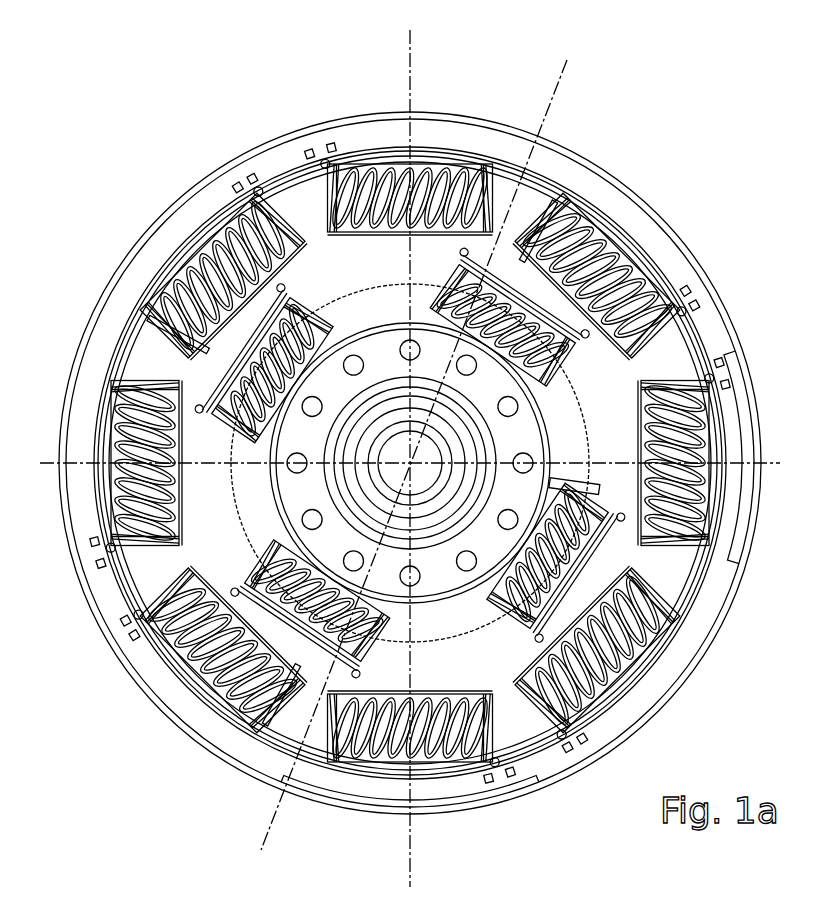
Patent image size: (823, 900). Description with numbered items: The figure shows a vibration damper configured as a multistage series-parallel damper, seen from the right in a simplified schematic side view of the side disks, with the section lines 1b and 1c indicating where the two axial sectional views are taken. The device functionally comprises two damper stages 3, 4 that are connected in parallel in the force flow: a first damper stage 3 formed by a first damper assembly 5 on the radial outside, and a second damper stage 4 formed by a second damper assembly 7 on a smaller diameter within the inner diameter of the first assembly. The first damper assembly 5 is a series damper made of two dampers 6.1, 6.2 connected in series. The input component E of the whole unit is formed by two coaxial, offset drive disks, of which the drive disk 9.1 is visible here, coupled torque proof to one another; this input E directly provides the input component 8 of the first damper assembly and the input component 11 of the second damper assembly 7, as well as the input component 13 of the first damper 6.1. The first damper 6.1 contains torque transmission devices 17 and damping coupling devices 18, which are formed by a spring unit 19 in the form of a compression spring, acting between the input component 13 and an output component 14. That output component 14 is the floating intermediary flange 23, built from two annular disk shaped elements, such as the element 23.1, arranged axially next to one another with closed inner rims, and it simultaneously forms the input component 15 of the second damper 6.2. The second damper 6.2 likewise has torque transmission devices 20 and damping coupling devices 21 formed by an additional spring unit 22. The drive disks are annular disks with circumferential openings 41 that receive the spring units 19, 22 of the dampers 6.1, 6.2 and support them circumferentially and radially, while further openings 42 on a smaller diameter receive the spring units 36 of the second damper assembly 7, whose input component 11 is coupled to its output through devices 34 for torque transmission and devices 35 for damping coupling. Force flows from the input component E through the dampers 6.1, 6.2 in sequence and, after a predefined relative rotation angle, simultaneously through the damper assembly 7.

The section line 1b- 1b is at (397, 38).
The section line 1c- 1c is at (547, 68).
The first damper stage 3 is at (410, 453).
The second damper stage 4 is at (262, 544).
The first damper assembly 5 is at (560, 206).
The first damper 6.1 is at (620, 236).
The second damper 6.2 is at (448, 172).
The second damper assembly 7 is at (303, 463).
The input component of the first damper assembly 8 is at (770, 457).
The drive disk 9.1 is at (705, 340).
The input component of the second damper assembly 11 is at (735, 415).
The input component of the first damper 13 is at (770, 457).
The output component of the first damper 14 is at (114, 318).
The input component of the second damper 15 is at (150, 358).
The torque transmission devices 17 is at (166, 649).
The damping coupling devices 18 is at (166, 649).
The spring unit 19 is at (227, 640).
The torque transmission devices 20 is at (432, 789).
The damping coupling devices 21 is at (432, 789).
The spring unit 22 is at (453, 757).
The intermediary flange 23 is at (589, 175).
The annular disk shaped element 23.1 is at (520, 204).
The devices for torque transmission 34 is at (645, 579).
The devices for damping coupling 35 is at (645, 579).
The spring units 36 is at (573, 573).
The openings 41 is at (298, 686).
The openings 42 is at (583, 532).
The input component E is at (707, 308).